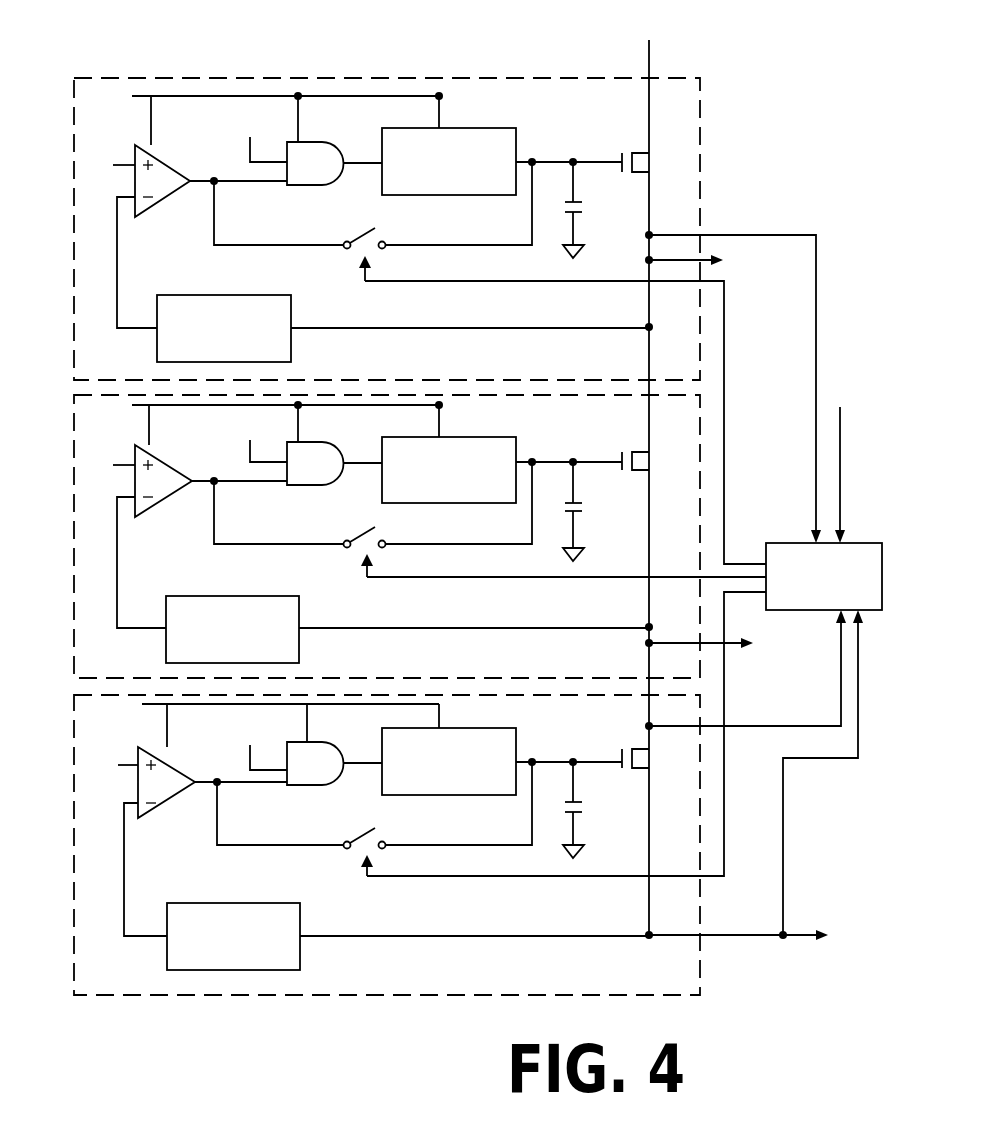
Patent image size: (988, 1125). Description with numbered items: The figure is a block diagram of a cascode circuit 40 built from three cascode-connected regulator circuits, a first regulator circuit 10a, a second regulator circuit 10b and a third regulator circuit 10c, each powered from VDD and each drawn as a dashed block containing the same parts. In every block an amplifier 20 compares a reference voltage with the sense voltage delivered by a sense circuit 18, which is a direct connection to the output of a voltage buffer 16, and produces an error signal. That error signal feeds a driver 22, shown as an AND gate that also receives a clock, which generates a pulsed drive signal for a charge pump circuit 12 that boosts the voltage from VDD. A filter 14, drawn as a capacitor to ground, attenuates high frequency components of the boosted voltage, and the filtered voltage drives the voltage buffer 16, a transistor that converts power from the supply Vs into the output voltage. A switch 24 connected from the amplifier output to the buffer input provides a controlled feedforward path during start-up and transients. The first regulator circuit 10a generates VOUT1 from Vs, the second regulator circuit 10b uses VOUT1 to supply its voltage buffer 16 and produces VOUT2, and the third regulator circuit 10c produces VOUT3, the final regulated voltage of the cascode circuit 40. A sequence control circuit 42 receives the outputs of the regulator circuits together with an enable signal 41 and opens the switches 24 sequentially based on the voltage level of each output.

The cascode circuit 40 is at (317, 62).
The first regulator circuit 10a is at (74, 106).
The second regulator circuit 10b is at (74, 513).
The third regulator circuit 10c is at (74, 841).
The charge pump circuit 12 is at (508, 128).
The filter 14 is at (575, 228).
The voltage buffer 16 is at (652, 185).
The sense circuit 18 is at (200, 295).
The amplifier 20 is at (164, 162).
The driver 22 is at (333, 142).
The switch 24 is at (343, 243).
The enable signal 41 is at (840, 493).
The sequence control circuit 42 is at (848, 543).